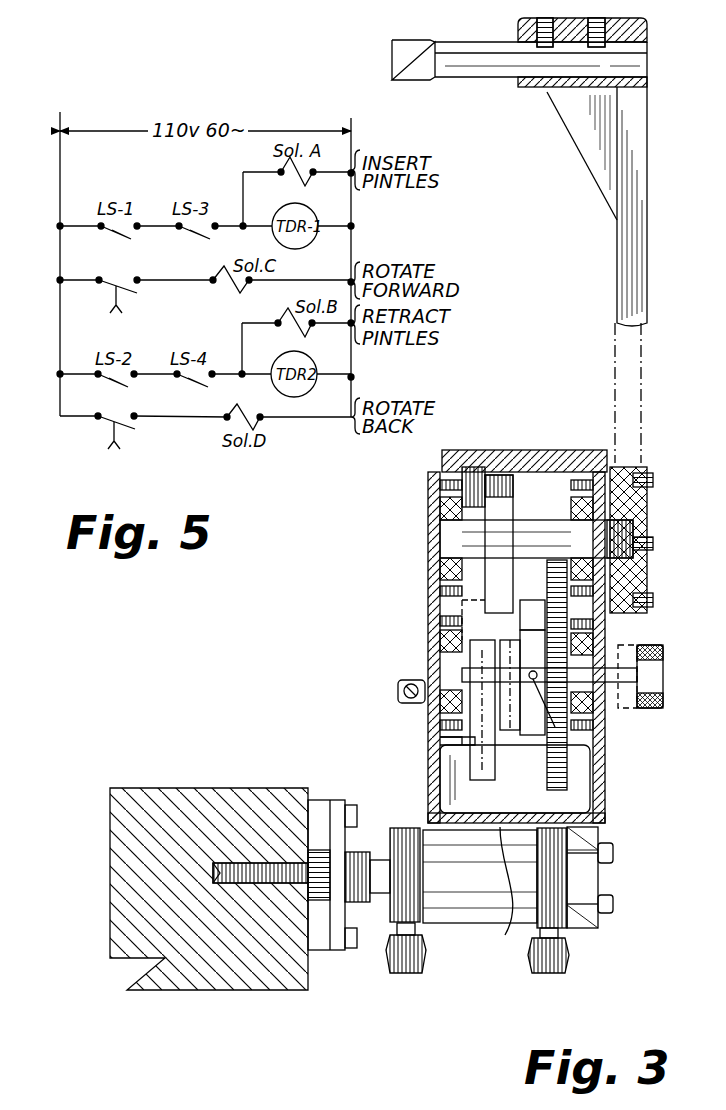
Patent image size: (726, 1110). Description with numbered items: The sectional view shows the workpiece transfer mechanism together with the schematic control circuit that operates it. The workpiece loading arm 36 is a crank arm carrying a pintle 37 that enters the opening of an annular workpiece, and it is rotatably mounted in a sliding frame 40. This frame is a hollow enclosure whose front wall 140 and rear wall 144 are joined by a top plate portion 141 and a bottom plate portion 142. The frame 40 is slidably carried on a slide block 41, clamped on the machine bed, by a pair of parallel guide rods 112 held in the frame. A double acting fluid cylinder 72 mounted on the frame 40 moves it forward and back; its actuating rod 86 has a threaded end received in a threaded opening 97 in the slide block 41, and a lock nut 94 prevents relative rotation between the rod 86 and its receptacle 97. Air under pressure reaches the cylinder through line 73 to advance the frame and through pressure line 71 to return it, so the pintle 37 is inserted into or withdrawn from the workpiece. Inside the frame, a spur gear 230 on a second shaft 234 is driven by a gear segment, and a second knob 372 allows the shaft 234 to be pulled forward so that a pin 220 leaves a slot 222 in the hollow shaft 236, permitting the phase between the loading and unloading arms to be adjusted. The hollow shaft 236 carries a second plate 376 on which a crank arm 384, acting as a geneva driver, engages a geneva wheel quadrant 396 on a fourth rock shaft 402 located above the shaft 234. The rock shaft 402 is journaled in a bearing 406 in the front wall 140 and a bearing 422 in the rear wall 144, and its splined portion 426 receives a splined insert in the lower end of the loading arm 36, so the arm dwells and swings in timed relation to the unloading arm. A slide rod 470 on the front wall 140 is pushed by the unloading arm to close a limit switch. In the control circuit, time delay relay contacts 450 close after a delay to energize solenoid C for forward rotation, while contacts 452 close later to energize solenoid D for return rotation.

In FIG. 3, the workpiece loading arm 36 is at (647, 157).
In FIG. 3, the pintle 37 is at (443, 78).
In FIG. 3, the sliding frame 40 is at (532, 610).
In FIG. 3, the slide block 41 is at (198, 988).
In FIG. 3, the pressure line 71 is at (413, 967).
In FIG. 3, the double acting fluid cylinder 72 is at (458, 907).
In FIG. 3, the pressure line 73 is at (565, 960).
In FIG. 3, the actuating rod 86 is at (357, 893).
In FIG. 3, the lock nut 94 is at (317, 850).
In FIG. 3, the threaded opening 97 is at (242, 863).
In FIG. 3, the guide rod 112 is at (363, 852).
In FIG. 3, the front wall 140 is at (440, 468).
In FIG. 3, the top plate portion 141 is at (538, 450).
In FIG. 3, the bottom plate portion 142 is at (505, 935).
In FIG. 3, the rear wall 144 is at (600, 787).
In FIG. 3, the pin 220 is at (563, 737).
In FIG. 3, the slot 222 is at (515, 692).
In FIG. 3, the spur gear 230 is at (552, 792).
In FIG. 3, the second shaft 234 is at (605, 697).
In FIG. 3, the hollow shaft 236 is at (507, 642).
In FIG. 3, the second knob 372 is at (648, 645).
In FIG. 3, the second plate 376 is at (432, 738).
In FIG. 3, the crank arm 384 is at (470, 618).
In FIG. 3, the geneva wheel quadrant 396 is at (472, 467).
In FIG. 3, the fourth rock shaft 402 is at (538, 520).
In FIG. 3, the bearing 406 is at (440, 522).
In FIG. 3, the bearing 422 is at (593, 572).
In FIG. 3, the splined portion 426 is at (633, 515).
In FIG. 5, the time delay relay contacts 450 is at (80, 305).
In FIG. 5, the time delay relay contacts 452 is at (88, 425).
In FIG. 3, the slide rod 470 is at (408, 681).